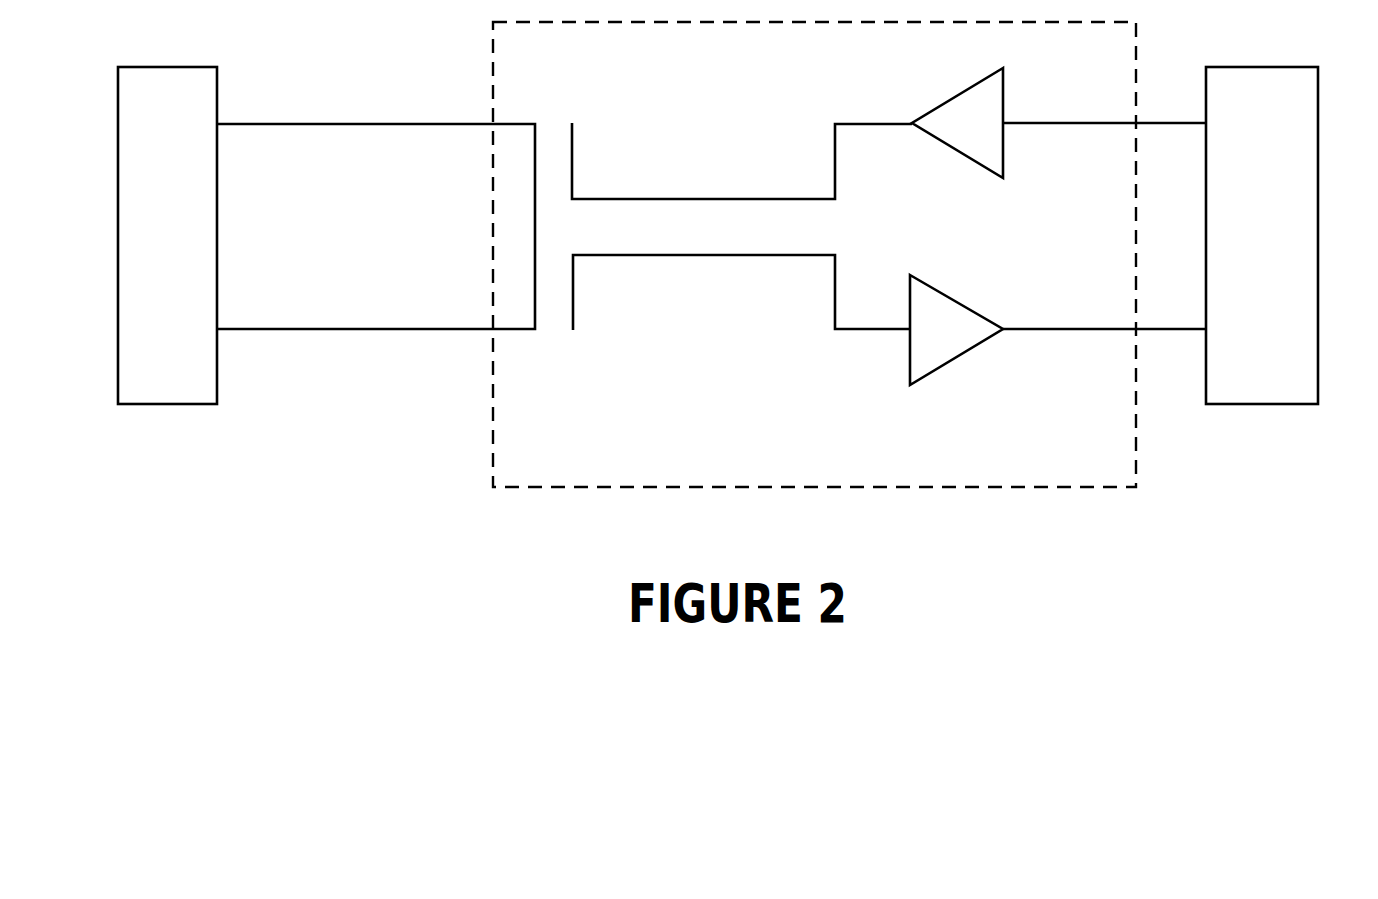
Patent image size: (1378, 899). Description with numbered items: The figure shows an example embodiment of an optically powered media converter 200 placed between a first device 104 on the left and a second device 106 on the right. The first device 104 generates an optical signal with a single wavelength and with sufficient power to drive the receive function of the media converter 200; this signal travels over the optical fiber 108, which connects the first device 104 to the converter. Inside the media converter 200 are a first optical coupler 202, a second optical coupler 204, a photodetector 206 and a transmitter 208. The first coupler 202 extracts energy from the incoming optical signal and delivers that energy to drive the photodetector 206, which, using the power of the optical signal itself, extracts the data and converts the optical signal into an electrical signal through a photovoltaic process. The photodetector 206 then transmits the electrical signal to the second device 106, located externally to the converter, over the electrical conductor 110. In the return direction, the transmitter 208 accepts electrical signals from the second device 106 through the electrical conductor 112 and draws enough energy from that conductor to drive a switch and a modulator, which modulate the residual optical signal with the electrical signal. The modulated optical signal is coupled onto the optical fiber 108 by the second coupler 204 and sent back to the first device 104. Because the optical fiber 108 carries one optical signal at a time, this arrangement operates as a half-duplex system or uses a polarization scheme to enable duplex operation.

The first device 104 is at (167, 235).
The second device 106 is at (1262, 235).
The optical fiber 108 is at (362, 330).
The electrical conductor 110 is at (1052, 328).
The electrical conductor 112 is at (1052, 122).
The optically powered media converter 200 is at (814, 254).
The first optical coupler 202 is at (573, 293).
The second optical coupler 204 is at (575, 147).
The photodetector 206 is at (957, 298).
The transmitter 208 is at (937, 103).